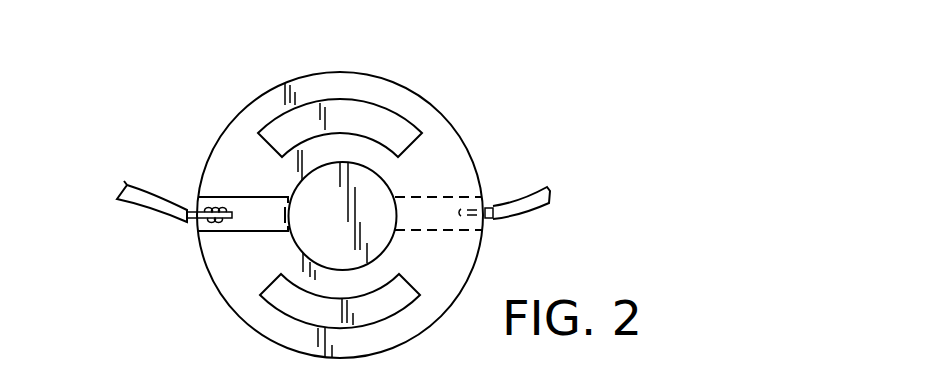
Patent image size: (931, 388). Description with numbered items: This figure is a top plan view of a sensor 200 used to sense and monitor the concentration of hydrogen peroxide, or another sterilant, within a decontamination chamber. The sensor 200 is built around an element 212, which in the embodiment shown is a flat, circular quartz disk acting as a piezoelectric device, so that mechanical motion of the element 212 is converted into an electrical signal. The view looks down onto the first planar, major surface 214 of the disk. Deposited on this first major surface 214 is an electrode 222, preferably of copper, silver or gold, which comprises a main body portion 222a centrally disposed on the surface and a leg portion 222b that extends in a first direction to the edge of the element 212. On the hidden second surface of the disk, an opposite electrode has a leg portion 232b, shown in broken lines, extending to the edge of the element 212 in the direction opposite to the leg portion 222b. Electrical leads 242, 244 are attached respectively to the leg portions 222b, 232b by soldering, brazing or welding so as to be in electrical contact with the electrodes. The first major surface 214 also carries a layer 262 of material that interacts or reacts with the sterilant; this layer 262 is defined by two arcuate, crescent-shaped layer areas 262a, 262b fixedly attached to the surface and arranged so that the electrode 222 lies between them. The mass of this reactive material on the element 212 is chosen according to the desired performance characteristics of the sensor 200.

The sensor 200 is at (523, 103).
The element 212 is at (447, 113).
The first planar, major surface 214 is at (448, 158).
The electrode 222 is at (292, 243).
The main body portion 222a is at (308, 186).
The leg portion 222b is at (253, 220).
The leg portion 232b is at (433, 226).
The electrical lead 242 is at (138, 205).
The electrical lead 244 is at (523, 208).
The layer 262 is at (367, 103).
The arcuate layer area 262a is at (339, 113).
The arcuate layer area 262b is at (288, 302).